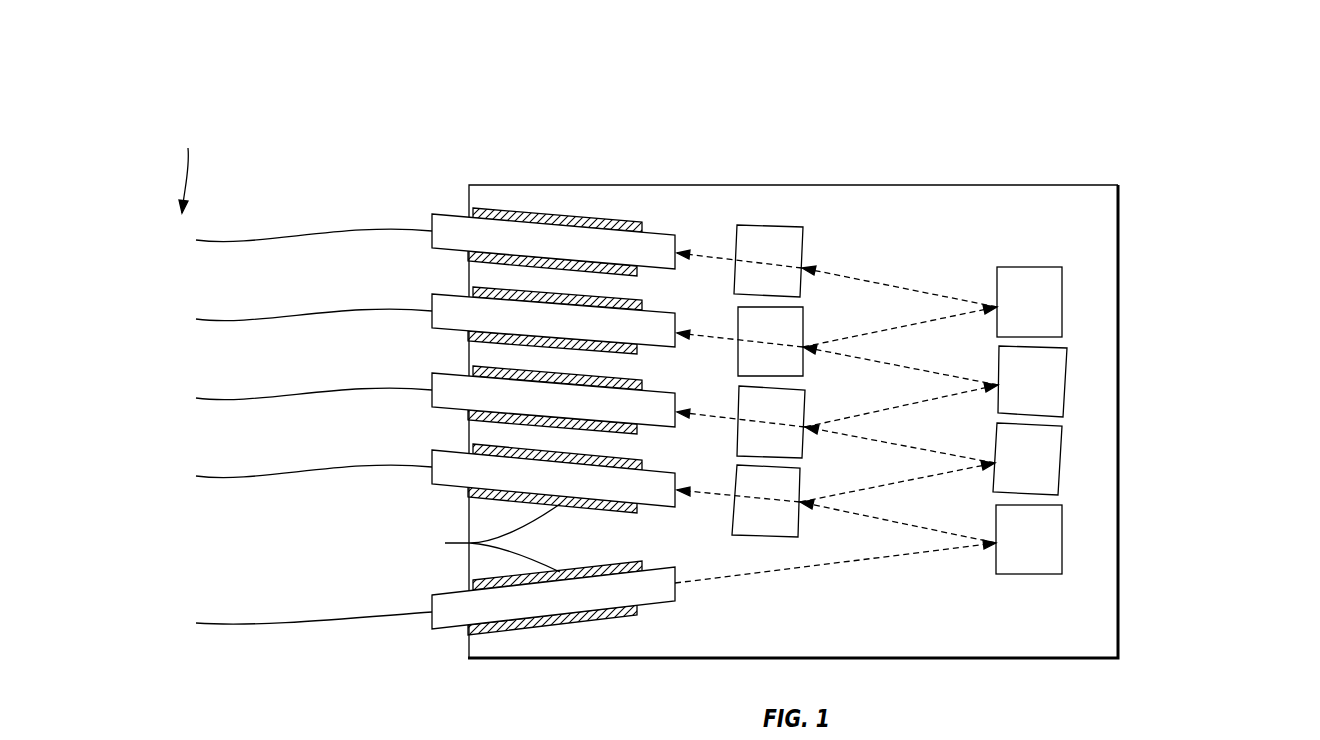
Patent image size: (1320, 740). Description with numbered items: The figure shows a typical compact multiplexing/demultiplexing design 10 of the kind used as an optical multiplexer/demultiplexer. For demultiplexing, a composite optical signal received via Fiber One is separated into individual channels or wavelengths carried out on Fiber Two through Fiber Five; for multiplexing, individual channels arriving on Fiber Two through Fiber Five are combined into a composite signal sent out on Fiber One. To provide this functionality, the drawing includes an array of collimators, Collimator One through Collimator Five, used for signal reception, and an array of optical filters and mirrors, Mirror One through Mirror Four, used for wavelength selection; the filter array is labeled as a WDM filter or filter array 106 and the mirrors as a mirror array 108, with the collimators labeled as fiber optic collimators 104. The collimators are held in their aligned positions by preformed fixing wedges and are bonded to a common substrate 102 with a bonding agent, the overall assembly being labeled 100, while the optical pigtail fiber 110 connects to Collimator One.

The compact multiplexing/demultiplexing design 10 is at (282, 47).
The wavelength division multiplexing module 100 is at (1117, 127).
The substrate 102 is at (1073, 601).
The fiber optic collimators 104 is at (442, 207).
The WDM filter or filter array 106 is at (765, 223).
The mirror array 108 is at (1053, 253).
The optical fiber 110 is at (392, 617).